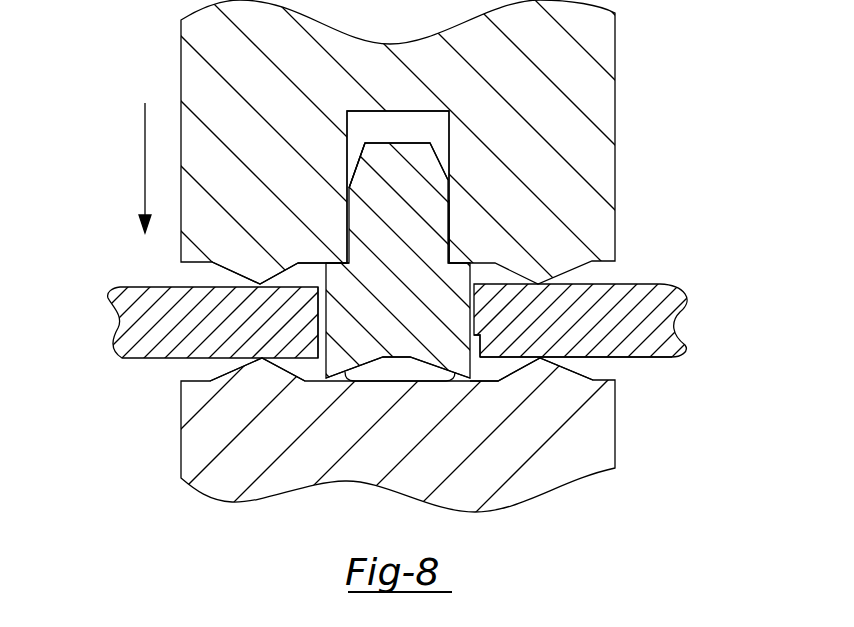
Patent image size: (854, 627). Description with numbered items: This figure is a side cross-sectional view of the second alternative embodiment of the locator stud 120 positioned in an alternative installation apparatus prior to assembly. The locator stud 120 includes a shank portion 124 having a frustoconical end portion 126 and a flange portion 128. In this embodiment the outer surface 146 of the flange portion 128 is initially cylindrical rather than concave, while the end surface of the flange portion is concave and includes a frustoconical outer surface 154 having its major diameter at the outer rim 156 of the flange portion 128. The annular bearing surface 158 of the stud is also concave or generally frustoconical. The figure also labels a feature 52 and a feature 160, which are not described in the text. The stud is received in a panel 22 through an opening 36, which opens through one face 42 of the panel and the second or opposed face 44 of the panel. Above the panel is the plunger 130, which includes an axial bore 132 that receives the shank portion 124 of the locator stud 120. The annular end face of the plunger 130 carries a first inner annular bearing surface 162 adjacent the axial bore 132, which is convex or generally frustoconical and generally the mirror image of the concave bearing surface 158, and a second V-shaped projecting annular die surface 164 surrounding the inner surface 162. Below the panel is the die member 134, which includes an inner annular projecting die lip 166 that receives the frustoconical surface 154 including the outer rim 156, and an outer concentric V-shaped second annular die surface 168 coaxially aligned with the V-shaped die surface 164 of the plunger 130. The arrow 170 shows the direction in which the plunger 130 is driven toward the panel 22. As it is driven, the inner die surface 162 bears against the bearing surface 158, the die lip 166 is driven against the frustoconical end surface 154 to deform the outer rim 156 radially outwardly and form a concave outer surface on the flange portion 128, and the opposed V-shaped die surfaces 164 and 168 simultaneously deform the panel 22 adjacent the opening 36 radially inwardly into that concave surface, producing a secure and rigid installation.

The panel 22 is at (112, 326).
The opening 36 is at (468, 322).
The face of the panel 42 is at (660, 286).
The second or opposed face of the panel 44 is at (660, 358).
The pin tip 52 is at (398, 368).
The locator stud 120 is at (515, 173).
The shank portion 124 is at (346, 208).
The frustoconical end portion 126 is at (438, 155).
The flange portion 128 is at (481, 335).
The plunger 130 is at (582, 79).
The axial bore 132 is at (347, 130).
The die member 134 is at (574, 477).
The outer surface of the flange portion 146 is at (318, 334).
The frustoconical outer surface 154 is at (428, 381).
The outer rim of the flange portion 156 is at (346, 380).
The annular bearing surface 158 is at (458, 264).
The die bottom surface 160 is at (328, 262).
The first inner annular bearing surface 162 is at (348, 268).
The second V-shaped projecting annular die surface 164 is at (262, 284).
The inner annular projecting die lip 166 is at (355, 381).
The outer concentric V-shaped second annular die surface 168 is at (262, 358).
The arrow 170 is at (144, 168).